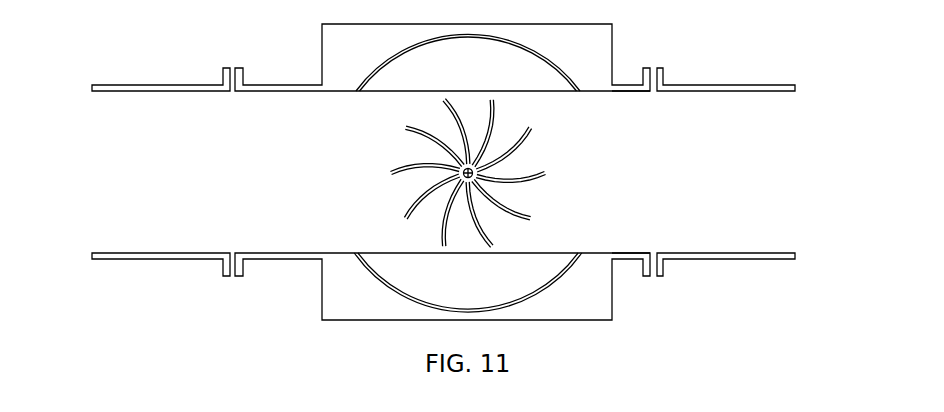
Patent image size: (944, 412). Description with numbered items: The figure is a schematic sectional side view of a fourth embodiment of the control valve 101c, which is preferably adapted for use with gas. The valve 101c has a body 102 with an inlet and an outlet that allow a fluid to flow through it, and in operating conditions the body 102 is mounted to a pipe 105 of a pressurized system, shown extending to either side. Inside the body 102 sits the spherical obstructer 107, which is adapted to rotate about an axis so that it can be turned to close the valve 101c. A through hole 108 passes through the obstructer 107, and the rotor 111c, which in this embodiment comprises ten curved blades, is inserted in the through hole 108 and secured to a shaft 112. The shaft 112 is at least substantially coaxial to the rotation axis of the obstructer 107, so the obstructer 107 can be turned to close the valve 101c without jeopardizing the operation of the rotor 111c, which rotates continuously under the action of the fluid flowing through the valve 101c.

The valve 101c is at (630, 60).
The body 102 is at (343, 285).
The pipe 105 is at (150, 258).
The obstructer 107 is at (412, 72).
The through hole 108 is at (617, 222).
The rotor 111c is at (516, 144).
The shaft 112 is at (508, 173).